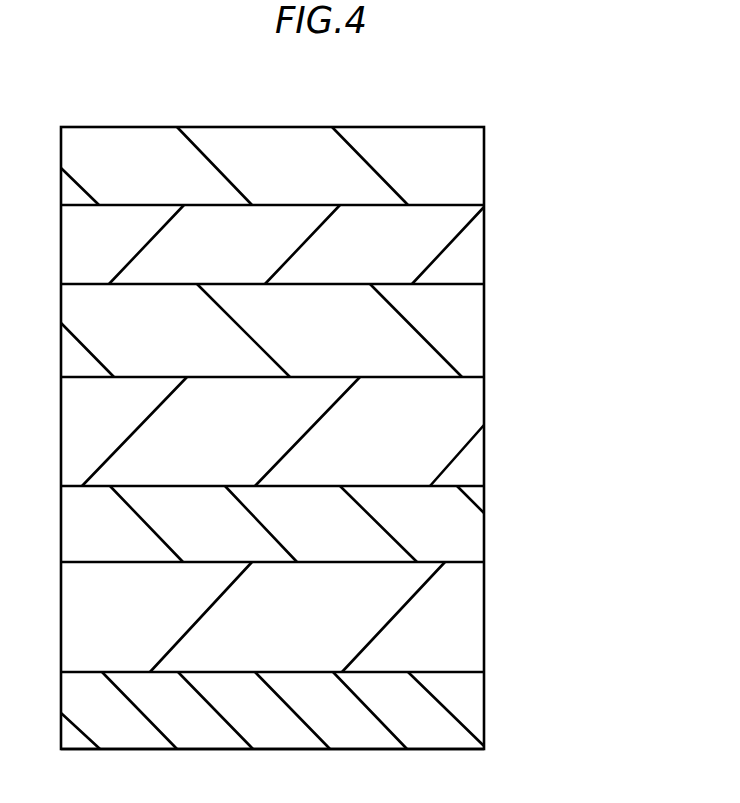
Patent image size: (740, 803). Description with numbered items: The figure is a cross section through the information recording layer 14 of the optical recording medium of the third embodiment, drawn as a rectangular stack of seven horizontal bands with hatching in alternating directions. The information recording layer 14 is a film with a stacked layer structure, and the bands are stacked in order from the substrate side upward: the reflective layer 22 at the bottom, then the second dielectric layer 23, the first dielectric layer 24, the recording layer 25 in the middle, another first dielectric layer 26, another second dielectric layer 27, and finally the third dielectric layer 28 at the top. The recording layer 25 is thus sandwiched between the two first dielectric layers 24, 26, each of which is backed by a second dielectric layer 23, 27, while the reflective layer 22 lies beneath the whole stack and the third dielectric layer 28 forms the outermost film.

The information recording layer 14 is at (427, 96).
The reflective layer 22 is at (484, 709).
The second dielectric layer 23 is at (484, 614).
The first dielectric layer 24 is at (484, 519).
The recording layer 25 is at (484, 427).
The first dielectric layer 26 is at (484, 326).
The second dielectric layer 27 is at (484, 239).
The third dielectric layer 28 is at (484, 162).